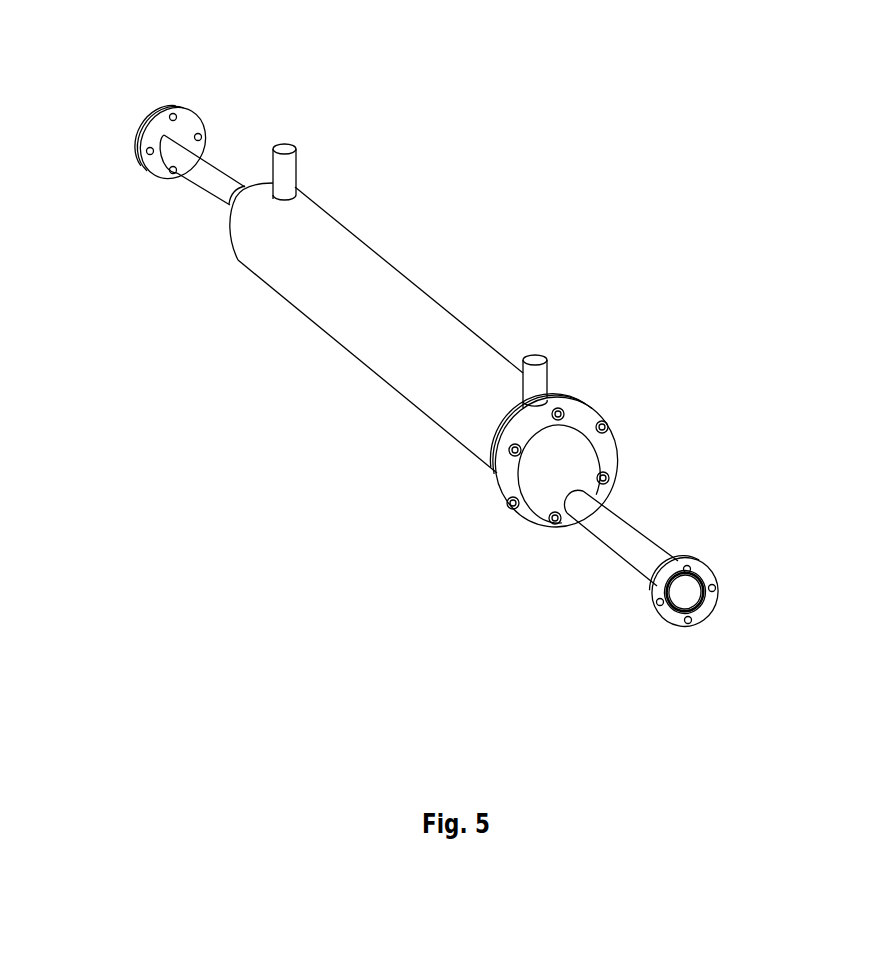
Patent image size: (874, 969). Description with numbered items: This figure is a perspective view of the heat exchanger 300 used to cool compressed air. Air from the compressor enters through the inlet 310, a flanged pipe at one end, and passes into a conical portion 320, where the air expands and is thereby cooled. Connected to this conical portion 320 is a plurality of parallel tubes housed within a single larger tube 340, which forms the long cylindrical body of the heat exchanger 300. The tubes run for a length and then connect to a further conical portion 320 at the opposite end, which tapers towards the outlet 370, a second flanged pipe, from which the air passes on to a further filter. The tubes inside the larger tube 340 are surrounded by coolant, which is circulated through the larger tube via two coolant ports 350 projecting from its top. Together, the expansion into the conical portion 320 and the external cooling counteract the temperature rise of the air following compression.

The heat exchanger 300 is at (444, 373).
The inlet 310 is at (135, 113).
The conical portion 320 is at (251, 166).
The larger tube 340 is at (386, 237).
The coolant ports 350 is at (308, 137).
The outlet 370 is at (720, 623).